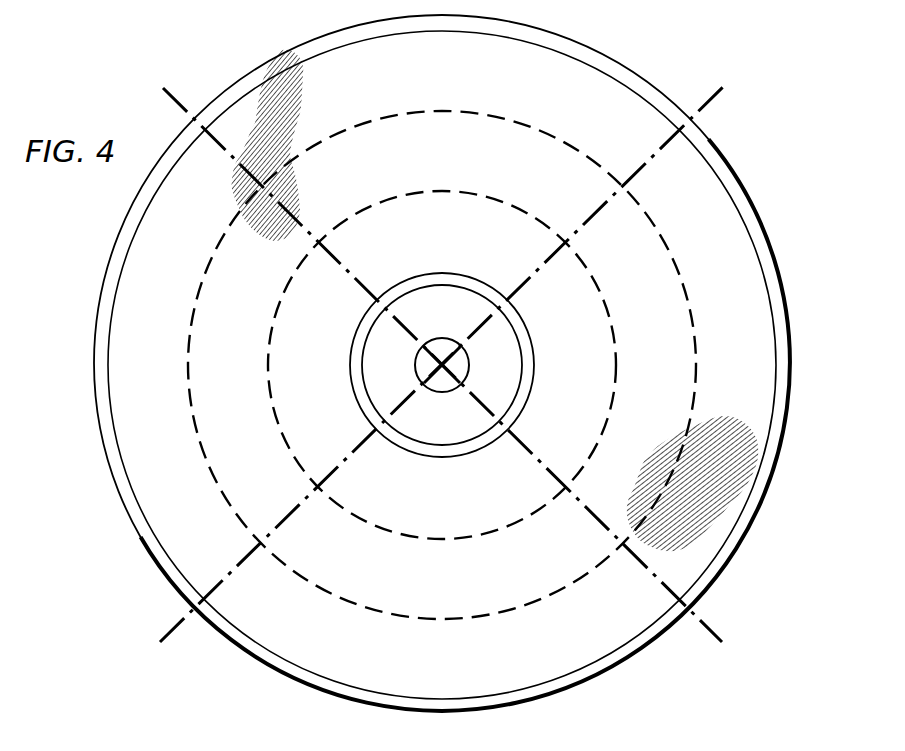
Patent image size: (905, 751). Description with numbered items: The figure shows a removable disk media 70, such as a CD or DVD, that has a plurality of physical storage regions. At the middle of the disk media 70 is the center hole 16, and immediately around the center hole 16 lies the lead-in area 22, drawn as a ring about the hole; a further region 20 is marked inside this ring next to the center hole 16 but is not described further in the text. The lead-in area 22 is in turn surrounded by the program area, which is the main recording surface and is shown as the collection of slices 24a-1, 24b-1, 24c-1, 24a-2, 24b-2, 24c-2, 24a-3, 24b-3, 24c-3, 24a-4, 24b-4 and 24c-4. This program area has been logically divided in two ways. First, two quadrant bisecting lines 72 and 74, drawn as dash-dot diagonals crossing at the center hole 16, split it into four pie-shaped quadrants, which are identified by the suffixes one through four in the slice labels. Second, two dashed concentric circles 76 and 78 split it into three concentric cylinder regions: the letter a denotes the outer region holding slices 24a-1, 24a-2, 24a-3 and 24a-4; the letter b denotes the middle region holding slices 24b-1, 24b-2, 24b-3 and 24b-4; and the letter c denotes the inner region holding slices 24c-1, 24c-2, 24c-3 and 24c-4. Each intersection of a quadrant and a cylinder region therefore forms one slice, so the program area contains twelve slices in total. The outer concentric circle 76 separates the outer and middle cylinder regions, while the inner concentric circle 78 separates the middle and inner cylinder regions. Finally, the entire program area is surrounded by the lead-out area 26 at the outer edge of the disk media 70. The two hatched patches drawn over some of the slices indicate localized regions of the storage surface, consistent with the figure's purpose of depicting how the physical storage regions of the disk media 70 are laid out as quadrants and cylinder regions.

The center hole 16 is at (444, 352).
The hub region 20 is at (427, 433).
The lead-in area 22 is at (483, 440).
The lead-out area 26 is at (606, 64).
The disk media 70 is at (783, 164).
The quadrant bisecting line 72 is at (173, 642).
The quadrant bisecting line 74 is at (173, 88).
The concentric circle 76 is at (520, 606).
The concentric circle 78 is at (598, 280).
The program area region 24a-1 is at (473, 83).
The program area region 24a-2 is at (769, 378).
The program area region 24a-3 is at (473, 677).
The program area region 24a-4 is at (178, 378).
The program area region 24b-1 is at (473, 163).
The program area region 24b-2 is at (688, 378).
The program area region 24b-3 is at (473, 593).
The program area region 24b-4 is at (259, 378).
The program area region 24c-1 is at (473, 243).
The program area region 24c-2 is at (608, 378).
The program area region 24c-3 is at (473, 513).
The program area region 24c-4 is at (339, 378).